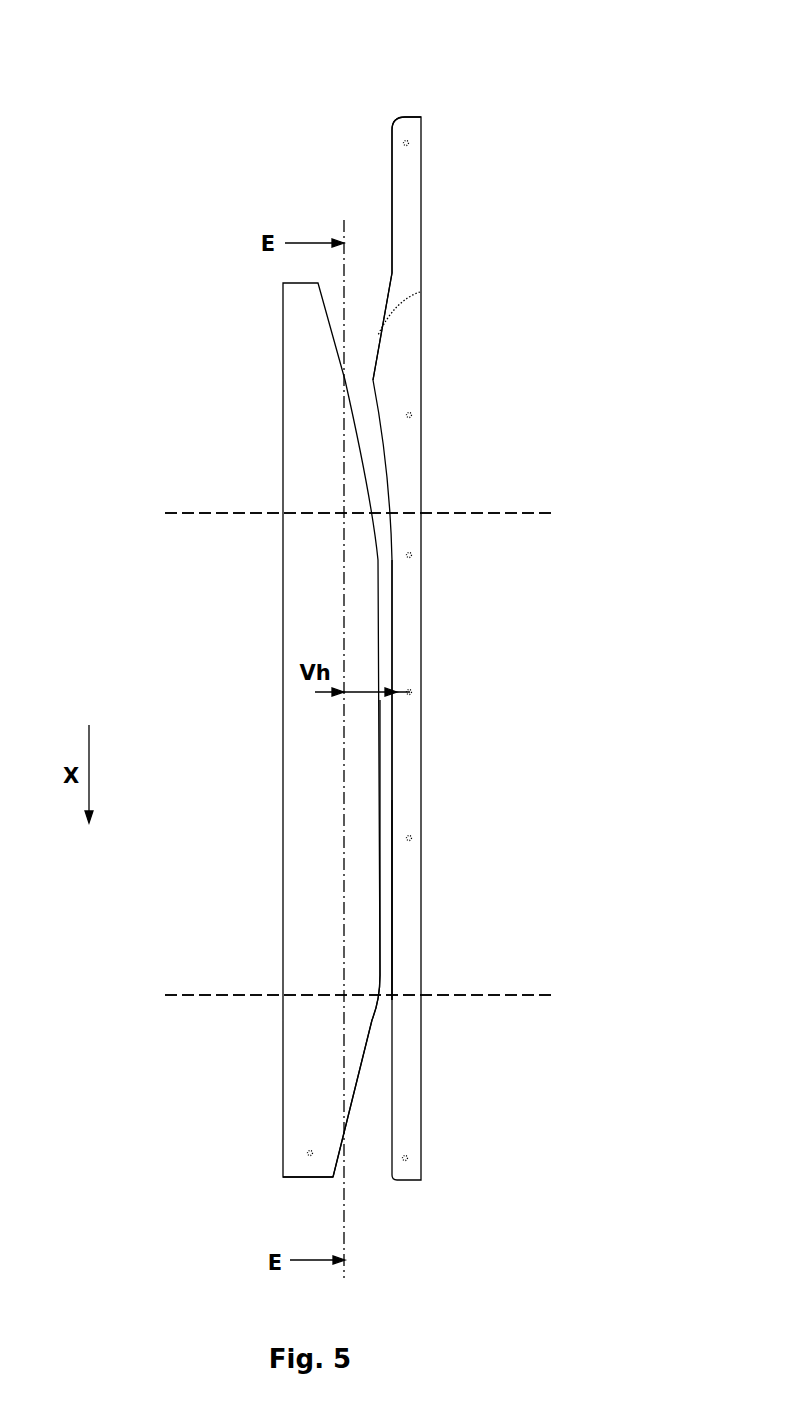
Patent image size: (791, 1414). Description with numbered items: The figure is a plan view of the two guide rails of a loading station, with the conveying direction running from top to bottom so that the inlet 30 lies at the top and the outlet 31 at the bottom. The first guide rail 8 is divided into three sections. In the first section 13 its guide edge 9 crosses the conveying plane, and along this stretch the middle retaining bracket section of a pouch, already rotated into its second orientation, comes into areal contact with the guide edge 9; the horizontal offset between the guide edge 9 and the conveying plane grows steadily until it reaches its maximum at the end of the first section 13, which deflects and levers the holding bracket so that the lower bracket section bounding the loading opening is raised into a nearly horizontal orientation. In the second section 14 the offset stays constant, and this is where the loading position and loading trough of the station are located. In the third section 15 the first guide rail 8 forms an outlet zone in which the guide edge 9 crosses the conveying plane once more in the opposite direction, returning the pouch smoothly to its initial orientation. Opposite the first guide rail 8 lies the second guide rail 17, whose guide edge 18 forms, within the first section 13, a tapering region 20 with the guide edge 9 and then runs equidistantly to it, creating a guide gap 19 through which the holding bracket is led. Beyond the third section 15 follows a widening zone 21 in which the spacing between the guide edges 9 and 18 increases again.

The first guide rail 8 is at (303, 397).
The guide edge 9 is at (392, 891).
The first section 13 is at (340, 399).
The second section 14 is at (340, 754).
The third section 15 is at (340, 1065).
The second guide rail 17 is at (408, 435).
The guide edge 18 is at (385, 838).
The guide gap 19 is at (392, 778).
The tapering region 20 is at (365, 366).
The widening zone 21 is at (378, 1066).
The inlet 30 is at (368, 125).
The outlet 31 is at (378, 1208).